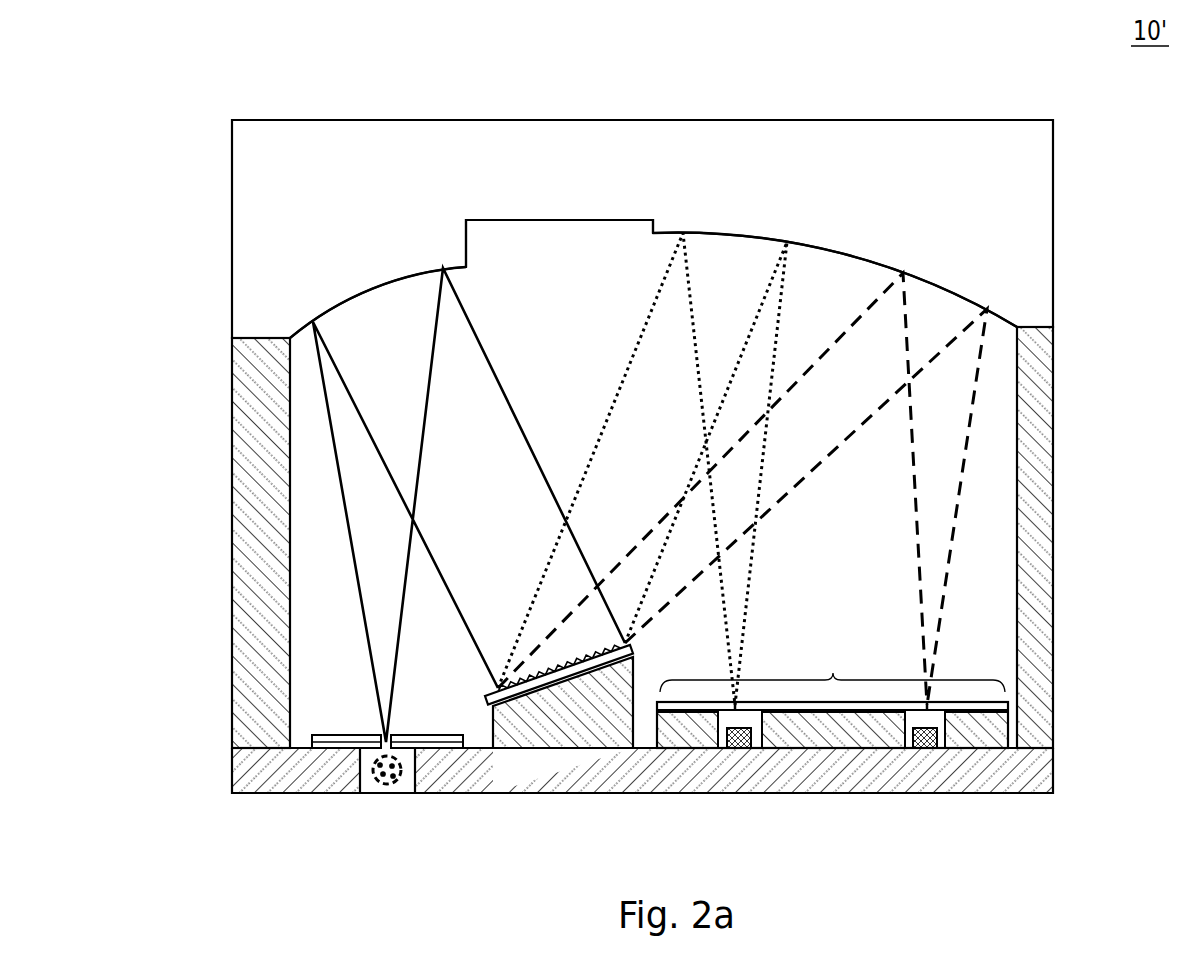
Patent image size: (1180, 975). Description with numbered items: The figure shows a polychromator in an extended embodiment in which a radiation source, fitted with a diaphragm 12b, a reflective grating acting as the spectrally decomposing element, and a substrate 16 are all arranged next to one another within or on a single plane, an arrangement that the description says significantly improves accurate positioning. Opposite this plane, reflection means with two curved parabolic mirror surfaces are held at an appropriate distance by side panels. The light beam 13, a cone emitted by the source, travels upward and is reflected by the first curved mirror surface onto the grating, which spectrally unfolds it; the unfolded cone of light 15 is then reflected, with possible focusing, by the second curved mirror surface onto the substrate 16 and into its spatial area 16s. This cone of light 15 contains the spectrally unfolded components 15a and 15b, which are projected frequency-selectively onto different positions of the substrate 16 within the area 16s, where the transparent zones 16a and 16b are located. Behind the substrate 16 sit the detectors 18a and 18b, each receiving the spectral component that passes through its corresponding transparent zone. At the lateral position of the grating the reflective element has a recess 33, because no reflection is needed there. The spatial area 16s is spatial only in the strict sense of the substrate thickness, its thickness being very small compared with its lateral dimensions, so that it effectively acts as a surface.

The diaphragm 12b is at (445, 745).
The light beam 13 is at (388, 605).
The light beam unfolded by the grating 15 is at (883, 460).
The spectrally unfolded light beam 15a is at (742, 497).
The spectrally unfolded light beam 15b is at (933, 549).
The substrate 16 is at (843, 749).
The transparent zone 16a is at (737, 704).
The transparent zone 16b is at (930, 705).
The spatial area 16s is at (832, 667).
The detector 18a is at (740, 743).
The detector 18b is at (927, 743).
The lid recess 33 is at (590, 280).